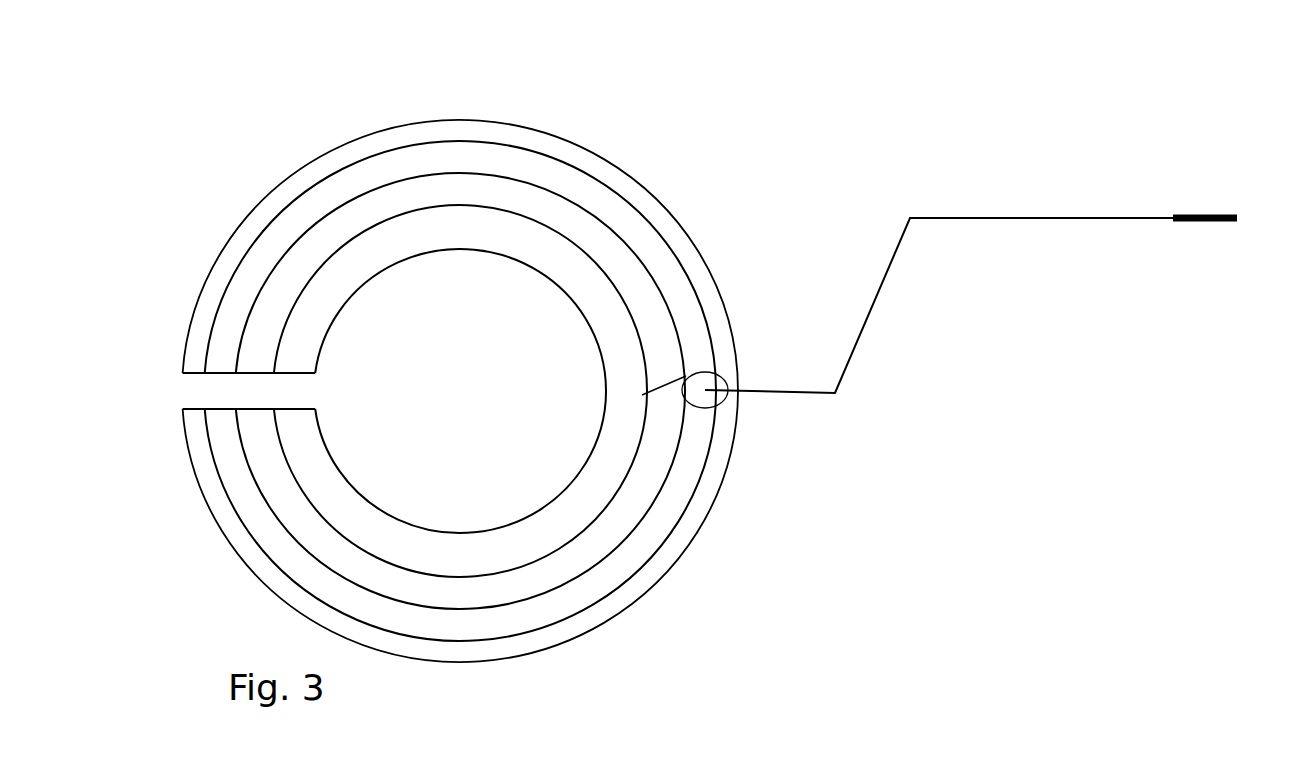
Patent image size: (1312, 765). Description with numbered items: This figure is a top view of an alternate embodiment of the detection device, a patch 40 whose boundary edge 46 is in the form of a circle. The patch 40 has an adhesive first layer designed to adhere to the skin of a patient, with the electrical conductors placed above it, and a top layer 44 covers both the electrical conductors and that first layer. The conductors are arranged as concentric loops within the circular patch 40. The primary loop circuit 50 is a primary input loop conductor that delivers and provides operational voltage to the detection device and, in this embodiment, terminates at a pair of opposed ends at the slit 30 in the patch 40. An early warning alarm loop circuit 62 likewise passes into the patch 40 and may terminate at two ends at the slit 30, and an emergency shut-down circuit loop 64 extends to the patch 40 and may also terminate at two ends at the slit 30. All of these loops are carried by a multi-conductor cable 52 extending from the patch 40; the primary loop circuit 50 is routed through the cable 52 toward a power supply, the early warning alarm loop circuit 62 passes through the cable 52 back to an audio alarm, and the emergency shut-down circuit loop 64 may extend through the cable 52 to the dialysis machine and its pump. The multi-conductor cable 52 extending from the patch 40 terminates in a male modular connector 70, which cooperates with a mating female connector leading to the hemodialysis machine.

The slit 30 is at (227, 395).
The patch 40 is at (870, 560).
The top layer 44 is at (461, 333).
The boundary edge 46 is at (683, 230).
The primary loop circuit 50 is at (443, 208).
The multi-conductor cable 52 is at (977, 216).
The early warning alarm loop circuit 62 is at (360, 195).
The emergency shut-down circuit loop 64 is at (303, 188).
The male modular connector 70 is at (1215, 216).